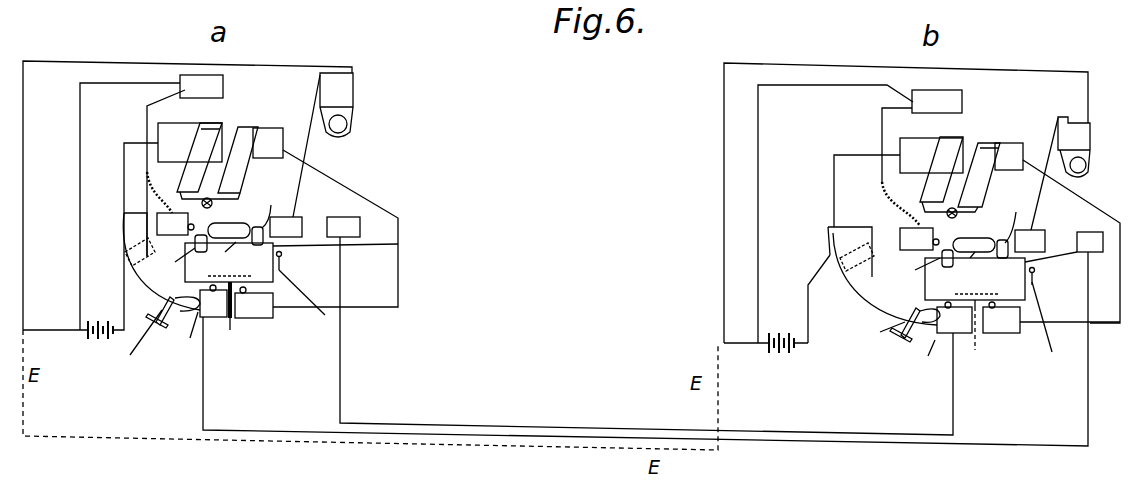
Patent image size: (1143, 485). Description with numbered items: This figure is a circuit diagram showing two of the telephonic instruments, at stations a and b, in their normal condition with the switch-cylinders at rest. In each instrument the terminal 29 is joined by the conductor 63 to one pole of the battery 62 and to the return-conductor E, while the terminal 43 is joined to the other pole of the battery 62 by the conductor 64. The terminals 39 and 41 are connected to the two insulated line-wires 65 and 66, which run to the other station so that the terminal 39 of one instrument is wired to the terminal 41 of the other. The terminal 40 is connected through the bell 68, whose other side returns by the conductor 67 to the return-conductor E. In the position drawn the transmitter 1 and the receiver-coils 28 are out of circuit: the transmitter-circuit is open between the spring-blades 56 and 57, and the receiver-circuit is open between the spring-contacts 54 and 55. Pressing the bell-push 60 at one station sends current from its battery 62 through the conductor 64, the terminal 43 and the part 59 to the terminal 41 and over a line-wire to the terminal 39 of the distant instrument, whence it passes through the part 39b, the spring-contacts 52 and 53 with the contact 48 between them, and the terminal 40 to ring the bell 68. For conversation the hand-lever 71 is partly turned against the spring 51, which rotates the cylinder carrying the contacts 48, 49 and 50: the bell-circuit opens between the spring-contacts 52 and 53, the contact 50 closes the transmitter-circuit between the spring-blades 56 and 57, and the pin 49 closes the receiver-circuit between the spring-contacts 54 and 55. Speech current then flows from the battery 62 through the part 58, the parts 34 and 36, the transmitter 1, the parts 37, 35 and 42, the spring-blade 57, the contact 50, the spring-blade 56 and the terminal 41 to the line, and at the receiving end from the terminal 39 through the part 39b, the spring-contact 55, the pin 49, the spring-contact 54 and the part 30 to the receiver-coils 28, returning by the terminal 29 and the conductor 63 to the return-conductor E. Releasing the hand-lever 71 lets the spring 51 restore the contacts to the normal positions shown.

The transmitter 1 is at (213, 197).
The receiver-coils 28 is at (524, 173).
The terminal 29 is at (223, 86).
The circuit part 30 is at (548, 231).
The circuit part 34 is at (560, 148).
The circuit part 35 is at (694, 225).
The circuit part 36 is at (570, 162).
The circuit part 37 is at (609, 167).
The terminal 39 is at (666, 226).
The circuit part 39b is at (305, 247).
The terminal 40 is at (298, 221).
The terminal 41 is at (538, 342).
The circuit part 42 is at (290, 308).
The terminal 43 is at (124, 238).
The contact 48 is at (605, 263).
The pin 49 is at (200, 256).
The contact 50 is at (613, 327).
The spring 51 is at (676, 322).
The spring-contact 52 is at (245, 222).
The spring-contact 53 is at (649, 212).
The spring-contact 54 is at (545, 264).
The spring-contact 55 is at (599, 261).
The spring-blade 56 is at (586, 309).
The spring-blade 57 is at (627, 310).
The circuit part 58 is at (124, 166).
The circuit part 59 is at (530, 269).
The bell-push 60 is at (158, 327).
The battery 62 is at (441, 353).
The conductor 63 is at (768, 112).
The conductor 64 is at (461, 278).
The line-wire 65 is at (556, 432).
The line-wire 66 is at (560, 440).
The conductor 67 is at (555, 202).
The bell 68 is at (353, 90).
The hand-lever 71 is at (282, 268).